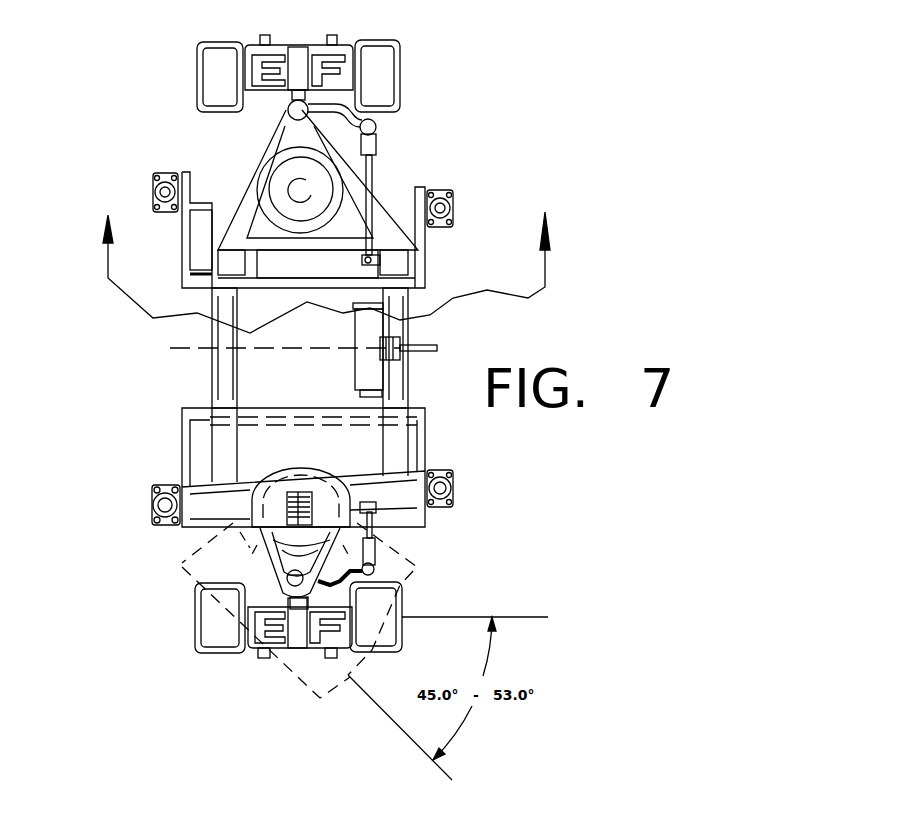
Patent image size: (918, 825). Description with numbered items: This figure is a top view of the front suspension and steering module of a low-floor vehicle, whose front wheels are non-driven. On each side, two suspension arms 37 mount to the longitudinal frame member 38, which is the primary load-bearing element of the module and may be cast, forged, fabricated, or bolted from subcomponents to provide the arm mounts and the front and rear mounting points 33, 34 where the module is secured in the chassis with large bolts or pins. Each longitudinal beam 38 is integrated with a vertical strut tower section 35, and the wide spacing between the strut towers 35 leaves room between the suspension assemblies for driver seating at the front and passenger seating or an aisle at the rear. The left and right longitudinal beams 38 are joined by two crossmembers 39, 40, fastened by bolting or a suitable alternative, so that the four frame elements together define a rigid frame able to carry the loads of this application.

The mounting point 33 is at (426, 472).
The mounting point 34 is at (152, 508).
The strut tower section 35 is at (383, 510).
The suspension arm 37 is at (260, 163).
The longitudinal frame member 38 is at (183, 250).
The crossmember 39 is at (220, 362).
The crossmember 40 is at (400, 330).